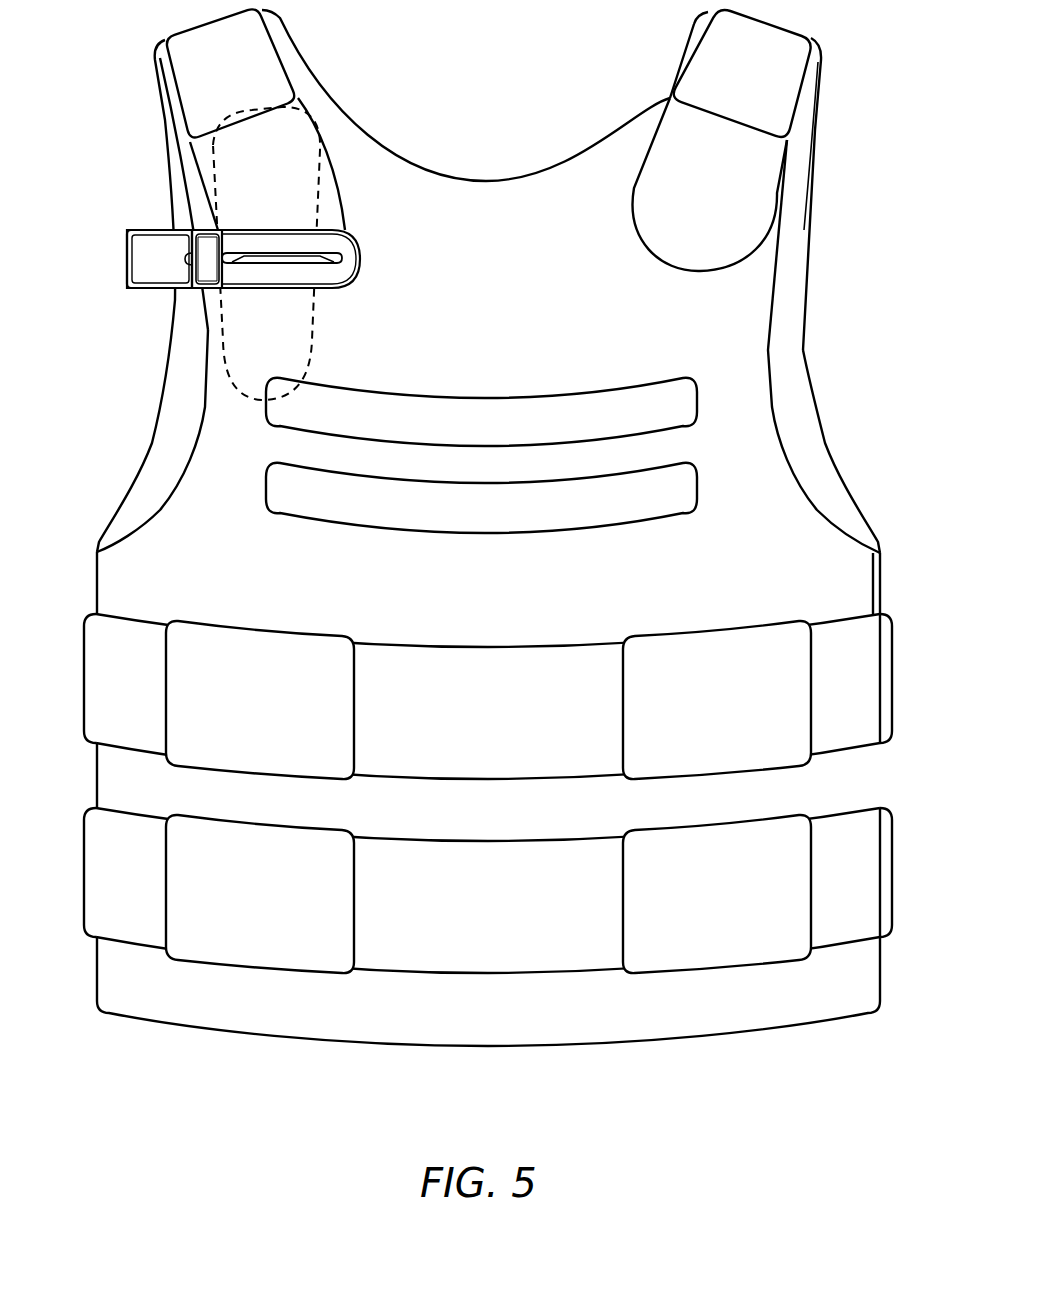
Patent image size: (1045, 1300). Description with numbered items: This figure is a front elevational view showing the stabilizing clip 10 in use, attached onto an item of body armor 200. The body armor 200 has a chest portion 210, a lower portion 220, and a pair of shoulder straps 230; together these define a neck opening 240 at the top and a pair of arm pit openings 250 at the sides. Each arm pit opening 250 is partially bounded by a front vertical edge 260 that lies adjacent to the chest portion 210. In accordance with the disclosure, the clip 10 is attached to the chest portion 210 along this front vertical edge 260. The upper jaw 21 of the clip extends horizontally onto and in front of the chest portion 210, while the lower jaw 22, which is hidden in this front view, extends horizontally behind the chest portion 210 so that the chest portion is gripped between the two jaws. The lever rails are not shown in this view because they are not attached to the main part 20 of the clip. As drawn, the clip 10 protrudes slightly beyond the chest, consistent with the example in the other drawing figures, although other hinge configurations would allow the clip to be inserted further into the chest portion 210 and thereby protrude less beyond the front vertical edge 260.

The clip 10 is at (90, 212).
The main part 20 is at (147, 290).
The upper jaw 21 is at (148, 240).
The lower jaw 22 is at (152, 230).
The body armor 200 is at (161, 1084).
The chest portion 210 is at (468, 207).
The lower portion 220 is at (823, 565).
The shoulder straps 230 is at (163, 37).
The neck opening 240 is at (368, 133).
The arm pit openings 250 is at (153, 447).
The front vertical edge 260 is at (205, 407).